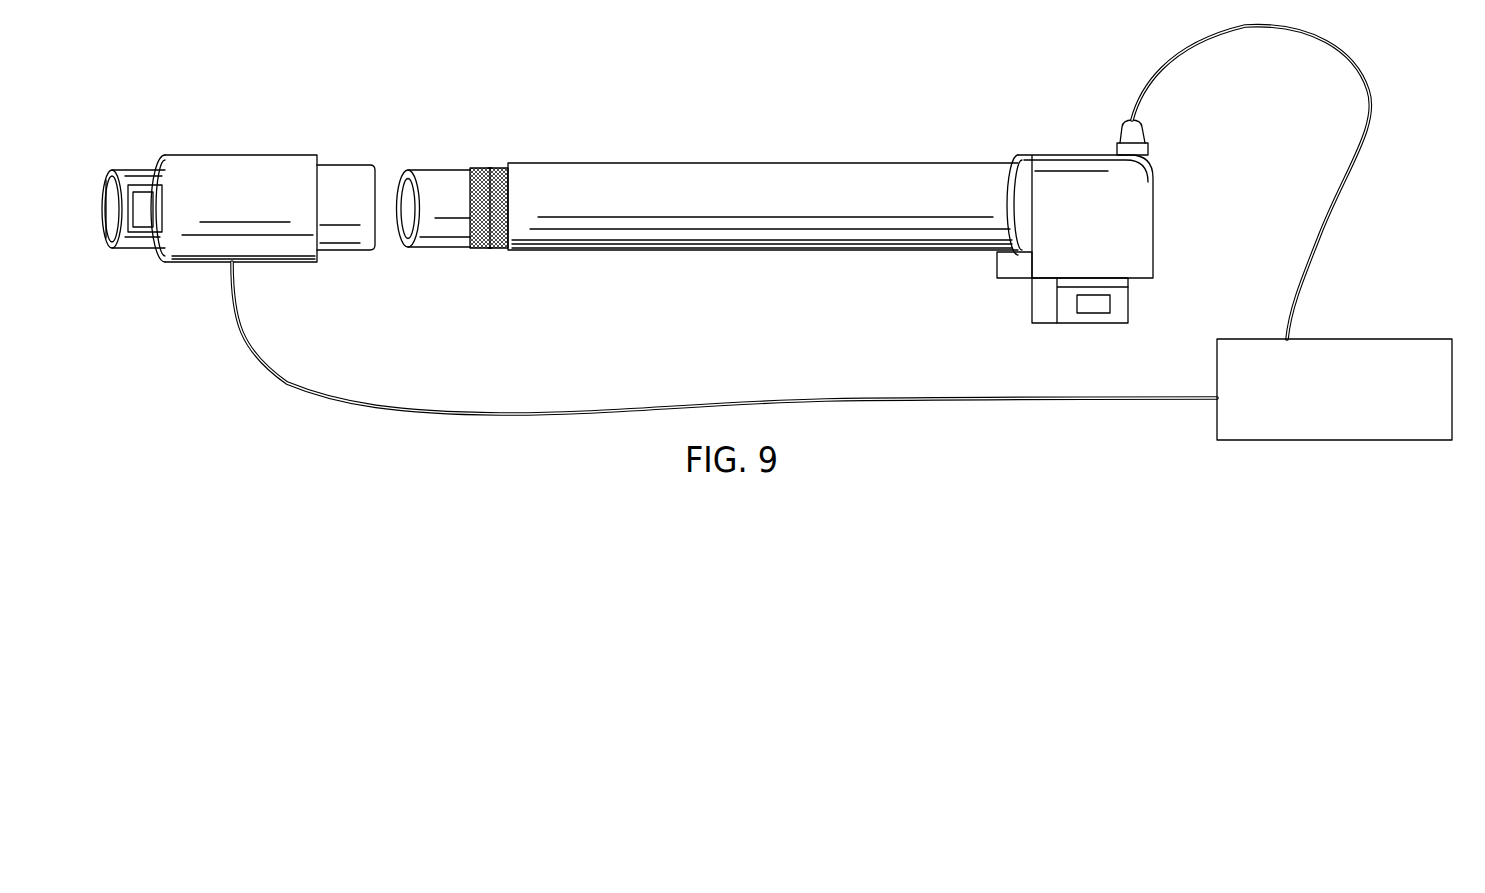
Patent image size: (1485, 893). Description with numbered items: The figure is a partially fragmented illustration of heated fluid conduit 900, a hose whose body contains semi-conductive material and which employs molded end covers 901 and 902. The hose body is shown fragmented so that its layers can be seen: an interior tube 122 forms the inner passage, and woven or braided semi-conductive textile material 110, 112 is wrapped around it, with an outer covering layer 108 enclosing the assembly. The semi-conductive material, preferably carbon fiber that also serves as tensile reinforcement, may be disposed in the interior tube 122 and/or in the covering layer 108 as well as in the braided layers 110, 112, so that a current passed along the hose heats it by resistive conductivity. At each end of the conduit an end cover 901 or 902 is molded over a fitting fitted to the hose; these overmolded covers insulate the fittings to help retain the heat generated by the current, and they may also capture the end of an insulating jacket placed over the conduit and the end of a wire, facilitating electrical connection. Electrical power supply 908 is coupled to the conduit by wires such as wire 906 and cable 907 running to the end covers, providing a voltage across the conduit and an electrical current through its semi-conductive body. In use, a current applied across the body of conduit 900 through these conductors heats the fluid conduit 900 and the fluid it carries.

The cover 108 is at (343, 170).
The tube 122 is at (427, 175).
The woven or braided semi-conductive textile material 110 is at (495, 171).
The woven or braided semi-conductive textile material 112 is at (477, 244).
The heated fluid conduit 900 is at (863, 142).
The molded end cover 901 is at (285, 273).
The molded end cover 902 is at (1057, 133).
The wire 906 is at (826, 403).
The cable 907 is at (1248, 29).
The electrical power supply 908 is at (1347, 348).